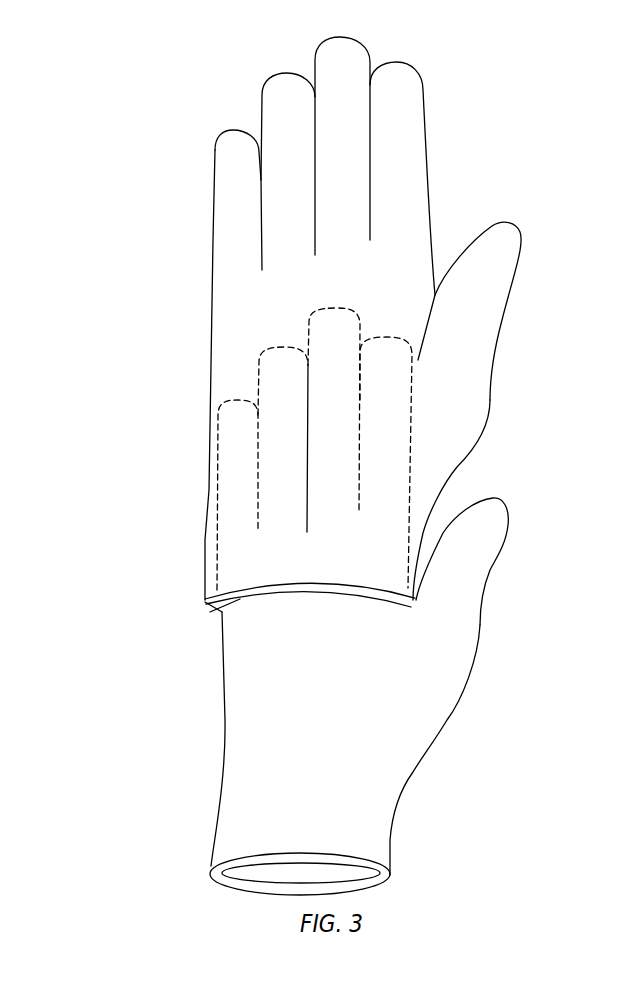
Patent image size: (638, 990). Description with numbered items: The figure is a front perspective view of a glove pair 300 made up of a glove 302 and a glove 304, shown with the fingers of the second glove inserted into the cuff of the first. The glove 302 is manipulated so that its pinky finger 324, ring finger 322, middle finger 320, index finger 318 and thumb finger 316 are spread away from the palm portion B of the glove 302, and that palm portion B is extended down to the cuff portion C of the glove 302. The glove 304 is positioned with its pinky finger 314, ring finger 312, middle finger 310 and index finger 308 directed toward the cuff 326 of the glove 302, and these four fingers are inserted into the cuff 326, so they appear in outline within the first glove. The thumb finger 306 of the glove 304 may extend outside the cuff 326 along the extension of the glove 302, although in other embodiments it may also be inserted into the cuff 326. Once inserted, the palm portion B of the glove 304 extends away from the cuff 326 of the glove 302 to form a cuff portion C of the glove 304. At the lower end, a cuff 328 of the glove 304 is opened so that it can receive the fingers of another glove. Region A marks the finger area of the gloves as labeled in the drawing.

The glove pair 300 is at (116, 66).
The glove 302 is at (500, 335).
The glove 304 is at (405, 785).
The thumb finger 306 is at (497, 500).
The index finger 308 is at (387, 337).
The middle finger 310 is at (337, 310).
The ring finger 312 is at (285, 347).
The pinky finger 314 is at (240, 400).
The thumb finger 316 is at (508, 224).
The index finger 318 is at (397, 63).
The middle finger 320 is at (343, 36).
The ring finger 322 is at (287, 74).
The pinky finger 324 is at (233, 131).
The cuff 326 is at (222, 612).
The cuff 328 is at (228, 878).
The finger region A is at (215, 220).
The palm portion B is at (207, 485).
The cuff portion C is at (205, 600).